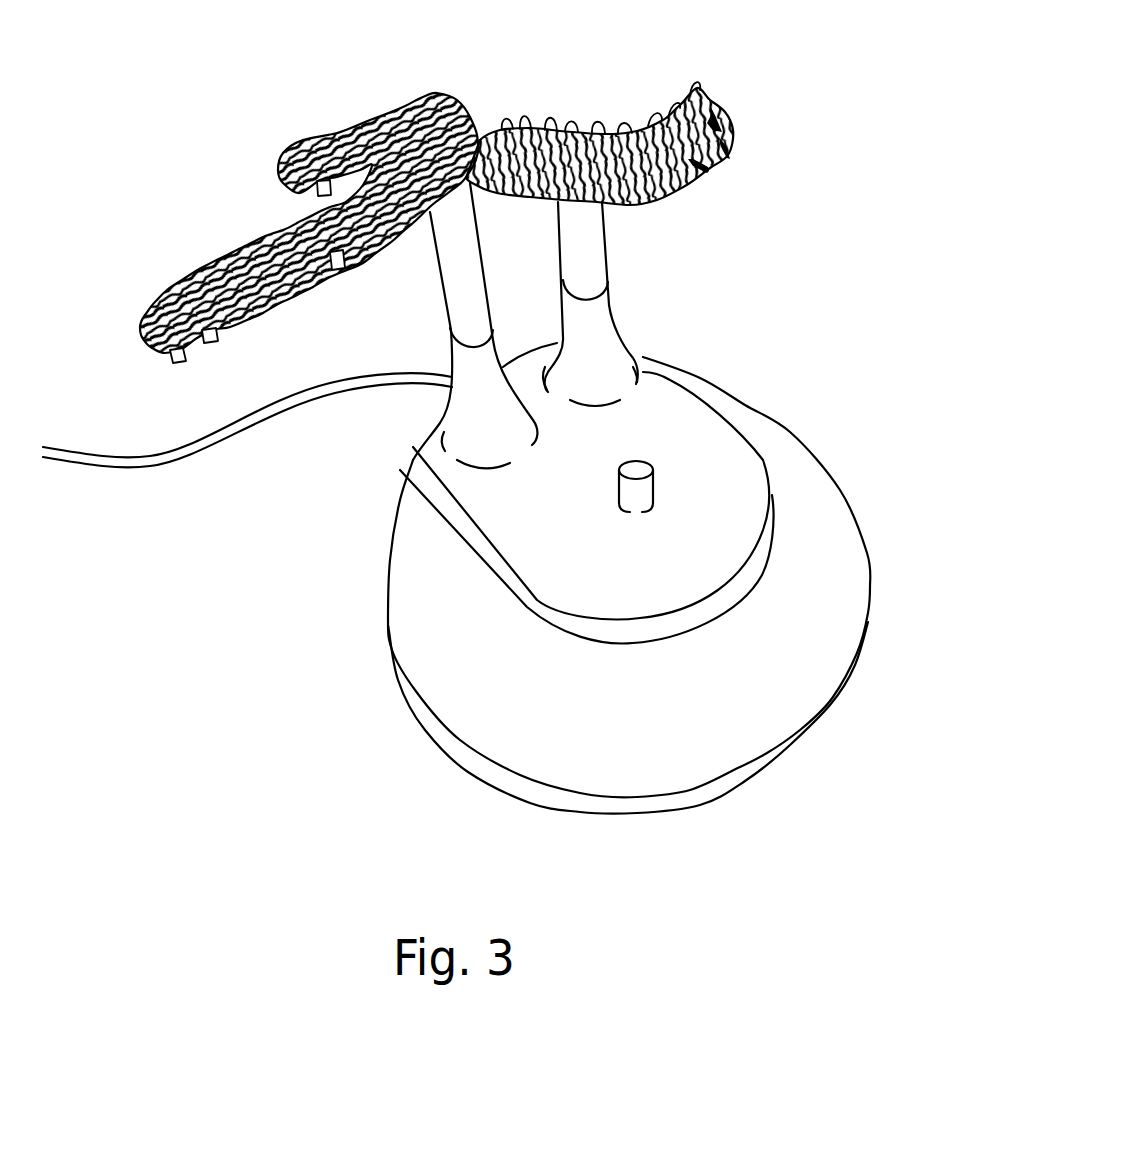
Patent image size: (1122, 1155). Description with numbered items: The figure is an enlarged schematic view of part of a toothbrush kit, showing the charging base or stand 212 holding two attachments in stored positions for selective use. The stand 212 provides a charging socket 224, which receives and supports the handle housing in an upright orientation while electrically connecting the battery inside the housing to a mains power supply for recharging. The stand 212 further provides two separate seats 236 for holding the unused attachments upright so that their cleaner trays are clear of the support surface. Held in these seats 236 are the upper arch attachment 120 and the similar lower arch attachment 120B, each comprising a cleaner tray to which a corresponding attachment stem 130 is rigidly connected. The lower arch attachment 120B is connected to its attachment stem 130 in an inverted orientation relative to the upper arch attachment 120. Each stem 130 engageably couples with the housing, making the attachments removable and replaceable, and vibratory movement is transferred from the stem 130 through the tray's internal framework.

The upper arch attachment 120 is at (705, 62).
The lower arch attachment 120B is at (245, 150).
The attachment stem 130 is at (449, 268).
The seats 236 is at (637, 360).
The charging socket 224 is at (734, 481).
The charging base or stand 212 is at (847, 590).